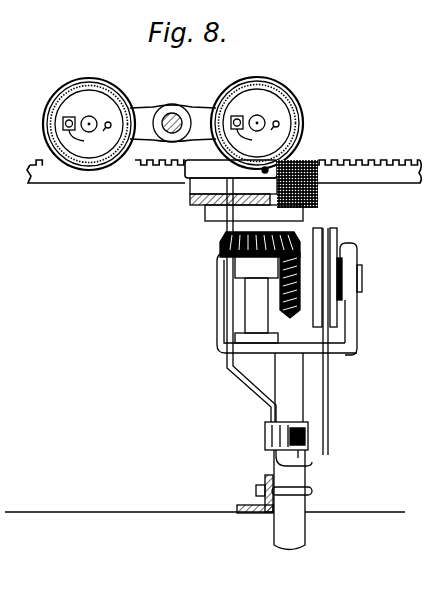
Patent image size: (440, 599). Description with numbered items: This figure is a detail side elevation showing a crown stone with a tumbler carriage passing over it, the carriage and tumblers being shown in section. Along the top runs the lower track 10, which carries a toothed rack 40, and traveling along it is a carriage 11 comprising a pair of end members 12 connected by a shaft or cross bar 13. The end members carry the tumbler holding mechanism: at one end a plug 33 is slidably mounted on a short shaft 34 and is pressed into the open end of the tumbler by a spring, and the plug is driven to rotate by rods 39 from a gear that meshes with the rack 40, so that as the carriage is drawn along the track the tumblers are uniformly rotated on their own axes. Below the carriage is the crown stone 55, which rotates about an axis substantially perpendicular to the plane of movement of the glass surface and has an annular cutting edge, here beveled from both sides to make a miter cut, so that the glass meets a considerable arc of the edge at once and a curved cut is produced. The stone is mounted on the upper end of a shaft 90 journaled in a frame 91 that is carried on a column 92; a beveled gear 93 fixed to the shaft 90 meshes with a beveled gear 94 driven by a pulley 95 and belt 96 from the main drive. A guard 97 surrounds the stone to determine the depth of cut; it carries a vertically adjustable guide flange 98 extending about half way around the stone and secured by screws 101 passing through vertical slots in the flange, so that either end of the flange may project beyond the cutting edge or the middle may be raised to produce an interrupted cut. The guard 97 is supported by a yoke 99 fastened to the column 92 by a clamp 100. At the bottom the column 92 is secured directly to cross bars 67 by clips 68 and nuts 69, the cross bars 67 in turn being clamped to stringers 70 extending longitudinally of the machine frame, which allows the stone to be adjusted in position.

The plug 33 is at (53, 99).
The short shaft 34 is at (89, 116).
The rods 39 is at (171, 136).
The carriage 11 is at (173, 111).
The shaft or cross bar 13 is at (173, 121).
The end member 12 is at (208, 107).
The rack 40 is at (225, 155).
The lower track 10 is at (90, 183).
The guide flange 98 is at (231, 169).
The screws 101 is at (252, 171).
The crown stone 55 is at (319, 195).
The guard 97 is at (195, 188).
The yoke 99 is at (226, 368).
The shaft 90 is at (287, 303).
The beveled gear 93 is at (221, 239).
The beveled gear 94 is at (285, 310).
The pulley 95 is at (337, 232).
The belt 96 is at (329, 411).
The frame 91 is at (352, 344).
The column 92 is at (293, 451).
The clamp 100 is at (265, 430).
The clip 68 is at (313, 491).
The nut 69 is at (264, 485).
The cross bar 67 is at (262, 513).
The stringer 70 is at (205, 524).